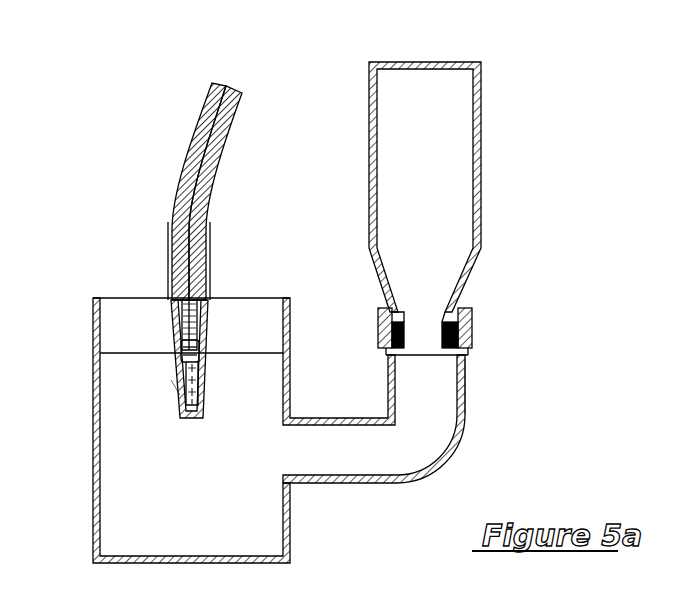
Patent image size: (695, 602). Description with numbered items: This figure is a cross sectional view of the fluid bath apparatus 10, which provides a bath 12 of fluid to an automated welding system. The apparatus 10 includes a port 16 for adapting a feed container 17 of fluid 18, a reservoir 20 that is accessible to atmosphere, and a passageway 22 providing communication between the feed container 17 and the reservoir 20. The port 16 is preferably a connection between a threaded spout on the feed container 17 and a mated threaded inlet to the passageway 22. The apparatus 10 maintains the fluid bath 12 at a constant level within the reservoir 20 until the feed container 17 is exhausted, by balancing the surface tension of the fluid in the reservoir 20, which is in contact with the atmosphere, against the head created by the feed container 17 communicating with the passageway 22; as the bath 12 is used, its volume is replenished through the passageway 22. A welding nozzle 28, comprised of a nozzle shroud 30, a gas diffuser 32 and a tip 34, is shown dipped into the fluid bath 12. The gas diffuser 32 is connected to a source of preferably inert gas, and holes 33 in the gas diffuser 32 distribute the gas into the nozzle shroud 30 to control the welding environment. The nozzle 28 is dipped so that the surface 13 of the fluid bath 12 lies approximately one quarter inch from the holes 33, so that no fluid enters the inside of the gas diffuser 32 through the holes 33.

The apparatus 10 is at (478, 435).
The fluid bath 12 is at (202, 510).
The surface of the fluid bath 13 is at (270, 352).
The port 16 is at (488, 324).
The feed container 17 is at (481, 107).
The fluid 18 is at (441, 170).
The reservoir 20 is at (93, 327).
The passageway 22 is at (395, 483).
The welding nozzle 28 is at (224, 304).
The nozzle shroud 30 is at (210, 403).
The gas diffuser 32 is at (212, 345).
The holes 33 is at (172, 343).
The tip 34 is at (177, 388).